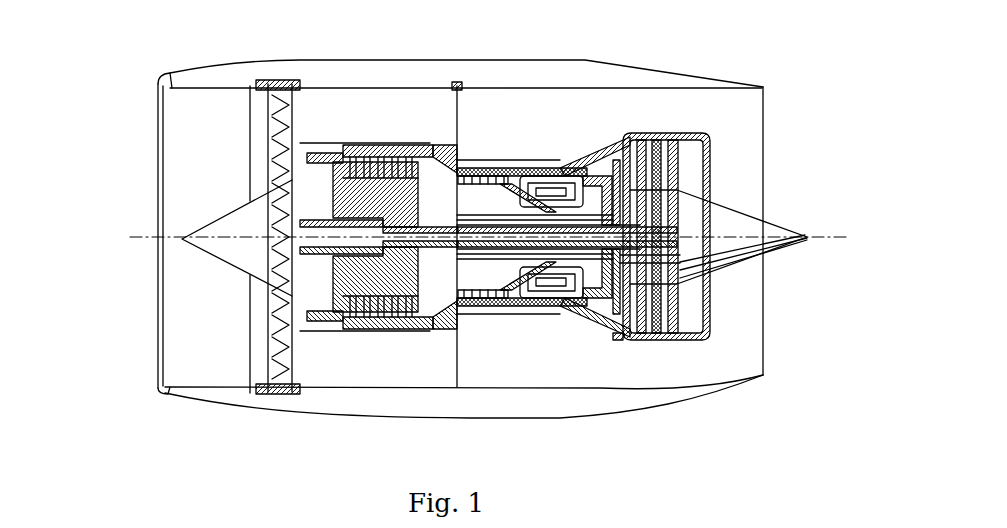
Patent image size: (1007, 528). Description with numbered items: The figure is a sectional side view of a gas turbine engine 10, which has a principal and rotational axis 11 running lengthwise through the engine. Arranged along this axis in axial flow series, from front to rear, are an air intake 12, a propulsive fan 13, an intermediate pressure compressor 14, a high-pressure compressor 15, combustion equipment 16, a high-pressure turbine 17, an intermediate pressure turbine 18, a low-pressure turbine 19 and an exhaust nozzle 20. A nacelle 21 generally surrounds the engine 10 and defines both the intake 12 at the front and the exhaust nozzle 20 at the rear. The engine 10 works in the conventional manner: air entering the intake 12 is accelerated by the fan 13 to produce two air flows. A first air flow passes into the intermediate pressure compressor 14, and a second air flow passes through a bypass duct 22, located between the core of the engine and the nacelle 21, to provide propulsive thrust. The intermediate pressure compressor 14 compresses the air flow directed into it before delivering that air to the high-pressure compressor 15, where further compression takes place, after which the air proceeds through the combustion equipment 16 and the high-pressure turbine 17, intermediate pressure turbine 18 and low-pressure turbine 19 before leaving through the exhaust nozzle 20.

The gas turbine engine 10 is at (138, 124).
The principal and rotational axis 11 is at (152, 237).
The air intake 12 is at (213, 92).
The propulsive fan 13 is at (268, 354).
The intermediate pressure compressor 14 is at (385, 318).
The high-pressure compressor 15 is at (473, 183).
The combustion equipment 16 is at (541, 313).
The high-pressure turbine 17 is at (581, 312).
The intermediate pressure turbine 18 is at (610, 153).
The low-pressure turbine 19 is at (628, 322).
The exhaust nozzle 20 is at (763, 375).
The nacelle 21 is at (583, 57).
The bypass duct 22 is at (432, 131).